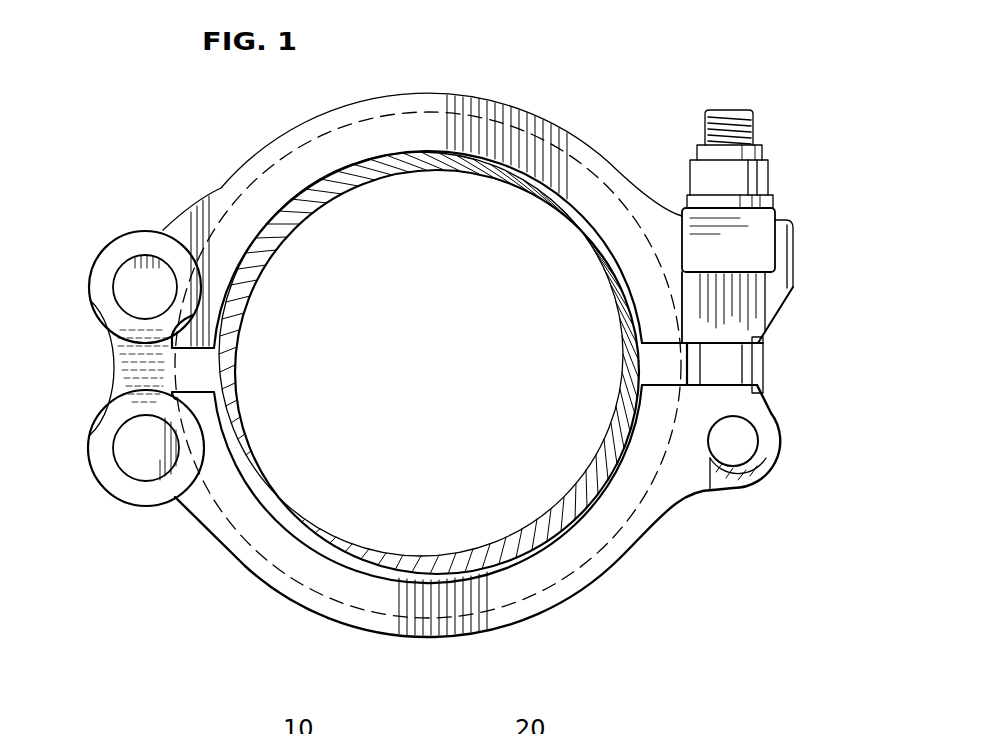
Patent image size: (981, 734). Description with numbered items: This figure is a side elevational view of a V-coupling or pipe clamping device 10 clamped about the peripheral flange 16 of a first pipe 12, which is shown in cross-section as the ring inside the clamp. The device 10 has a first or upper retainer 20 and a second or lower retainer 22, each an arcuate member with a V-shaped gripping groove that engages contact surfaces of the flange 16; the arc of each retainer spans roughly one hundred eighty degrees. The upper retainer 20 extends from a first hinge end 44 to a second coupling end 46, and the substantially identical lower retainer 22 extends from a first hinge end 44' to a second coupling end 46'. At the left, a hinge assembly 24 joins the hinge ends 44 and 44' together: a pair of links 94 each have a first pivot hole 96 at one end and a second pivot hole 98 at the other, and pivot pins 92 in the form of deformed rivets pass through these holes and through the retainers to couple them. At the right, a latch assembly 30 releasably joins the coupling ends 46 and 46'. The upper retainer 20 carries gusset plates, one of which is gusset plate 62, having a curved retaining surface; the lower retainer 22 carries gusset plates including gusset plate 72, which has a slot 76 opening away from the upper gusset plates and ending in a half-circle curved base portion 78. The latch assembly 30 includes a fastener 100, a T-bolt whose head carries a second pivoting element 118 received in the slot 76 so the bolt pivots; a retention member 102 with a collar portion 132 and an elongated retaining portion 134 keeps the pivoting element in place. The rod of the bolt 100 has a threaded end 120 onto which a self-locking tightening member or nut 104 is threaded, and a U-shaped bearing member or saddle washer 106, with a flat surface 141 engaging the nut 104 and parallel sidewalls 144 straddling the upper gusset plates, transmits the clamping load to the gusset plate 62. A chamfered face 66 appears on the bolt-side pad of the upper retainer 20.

The pipe clamping device 10 is at (210, 118).
The first pipe 12 is at (338, 188).
The peripheral flange 16 is at (320, 162).
The first retainer 20 is at (478, 96).
The second retainer 22 is at (616, 570).
The hinge assembly 24 is at (109, 243).
The latch assembly 30 is at (767, 385).
The first hinge end 44 is at (231, 331).
The first hinge end 44' is at (237, 409).
The second coupling end 46 is at (659, 329).
The second coupling end 46' is at (655, 393).
The gusset plate 62 is at (767, 290).
The chamfered face 66 is at (768, 328).
The gusset plate 72 is at (777, 460).
The slot 76 is at (716, 494).
The curved base portion 78 is at (754, 434).
The pivot pins 92 is at (163, 302).
The links 94 is at (137, 365).
The first pivot hole 96 is at (119, 285).
The second pivot hole 98 is at (125, 467).
The fastener 100 is at (737, 456).
The retention member 102 is at (722, 470).
The tightening member 104 is at (690, 178).
The bearing member 106 is at (767, 240).
The second pivoting element 118 is at (750, 451).
The threaded end 120 is at (738, 108).
The collar portion 132 is at (766, 366).
The elongated retaining portion 134 is at (766, 460).
The flat surface 141 is at (748, 197).
The sidewalls 144 is at (718, 261).